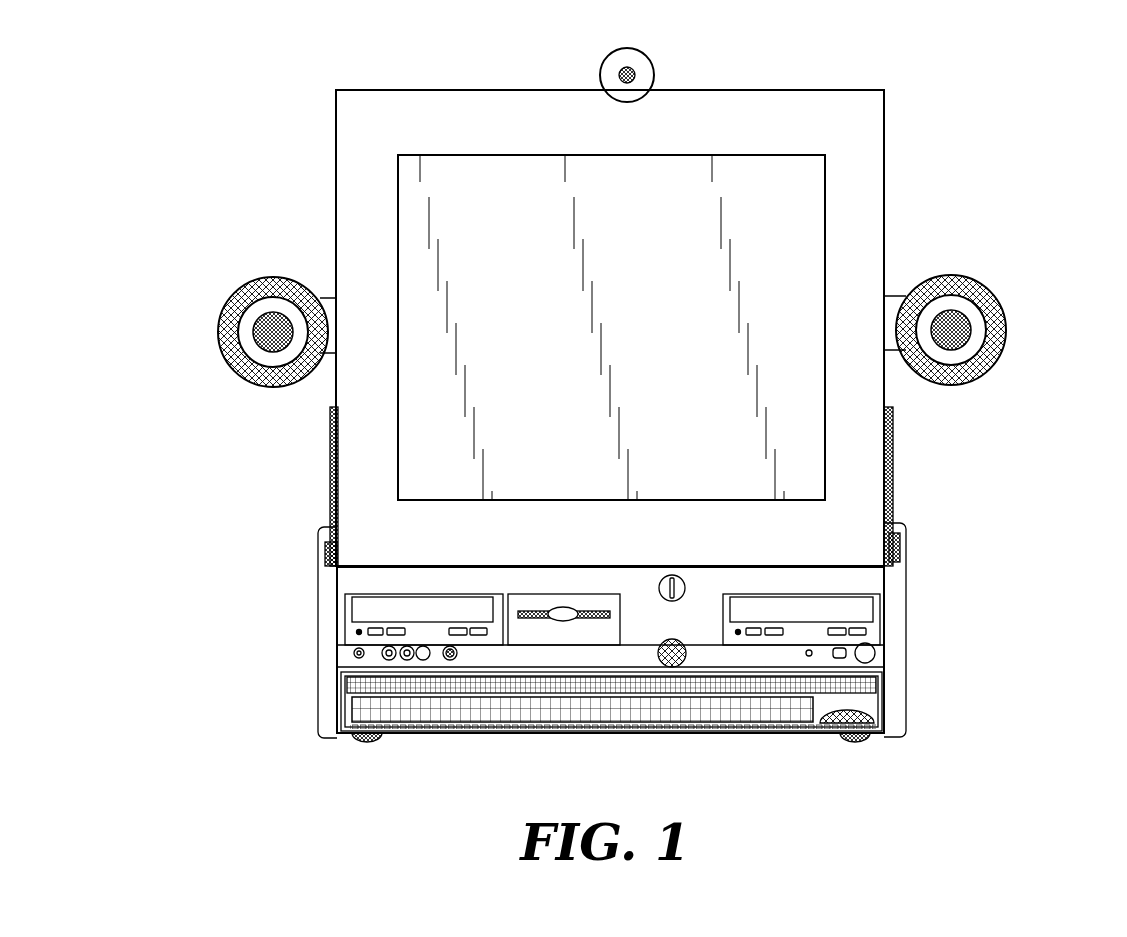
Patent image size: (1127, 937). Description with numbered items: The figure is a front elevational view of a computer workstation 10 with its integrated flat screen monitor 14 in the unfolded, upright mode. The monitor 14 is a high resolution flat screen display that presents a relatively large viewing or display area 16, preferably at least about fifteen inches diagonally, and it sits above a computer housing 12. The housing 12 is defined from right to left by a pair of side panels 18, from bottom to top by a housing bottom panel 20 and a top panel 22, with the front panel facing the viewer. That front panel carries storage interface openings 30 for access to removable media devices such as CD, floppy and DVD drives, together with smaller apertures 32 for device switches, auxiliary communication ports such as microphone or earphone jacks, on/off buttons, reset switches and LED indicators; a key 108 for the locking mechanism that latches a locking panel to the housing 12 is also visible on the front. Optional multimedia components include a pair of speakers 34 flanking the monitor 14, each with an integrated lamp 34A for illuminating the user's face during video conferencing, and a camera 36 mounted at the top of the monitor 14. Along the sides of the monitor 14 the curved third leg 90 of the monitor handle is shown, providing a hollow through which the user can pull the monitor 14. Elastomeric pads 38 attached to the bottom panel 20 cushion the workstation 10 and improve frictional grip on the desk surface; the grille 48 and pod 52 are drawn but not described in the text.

The computer workstation 10 is at (1030, 130).
The computer housing 12 is at (1018, 578).
The monitor 14 is at (866, 127).
The display area 16 is at (815, 208).
The side panels 18 is at (327, 592).
The housing bottom panel 20 is at (432, 735).
The top panel 22 is at (392, 565).
The storage interface openings 30 is at (365, 600).
The apertures 32 is at (423, 660).
The speakers 34 is at (258, 341).
The integrated lamps 34A is at (270, 308).
The camera 36 is at (632, 70).
The elastomeric pads 38 is at (862, 742).
The speaker grille 48 is at (620, 703).
The subwoofer pod 52 is at (835, 710).
The third leg 90 is at (330, 457).
The key 108 is at (674, 600).